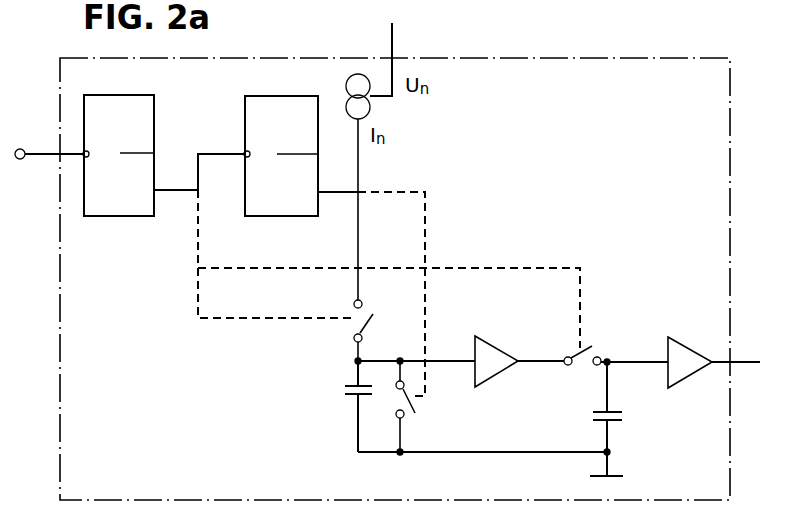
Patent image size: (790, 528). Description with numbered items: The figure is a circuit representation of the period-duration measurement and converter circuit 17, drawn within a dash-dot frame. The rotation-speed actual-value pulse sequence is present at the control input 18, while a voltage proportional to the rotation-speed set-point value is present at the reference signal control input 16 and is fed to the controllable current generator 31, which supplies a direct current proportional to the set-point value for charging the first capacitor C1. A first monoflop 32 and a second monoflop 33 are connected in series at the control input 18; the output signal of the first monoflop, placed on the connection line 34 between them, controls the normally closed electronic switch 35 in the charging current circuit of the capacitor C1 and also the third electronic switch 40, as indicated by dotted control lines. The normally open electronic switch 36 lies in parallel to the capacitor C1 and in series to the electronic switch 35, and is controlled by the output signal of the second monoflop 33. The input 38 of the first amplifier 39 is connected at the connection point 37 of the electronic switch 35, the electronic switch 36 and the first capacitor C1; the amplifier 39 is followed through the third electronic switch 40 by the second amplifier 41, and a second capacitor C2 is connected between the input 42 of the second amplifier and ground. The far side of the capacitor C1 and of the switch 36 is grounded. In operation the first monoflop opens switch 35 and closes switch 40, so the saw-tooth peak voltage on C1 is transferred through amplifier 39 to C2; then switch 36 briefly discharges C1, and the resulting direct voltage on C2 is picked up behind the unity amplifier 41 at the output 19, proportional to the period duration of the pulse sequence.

The reference signal control input 16 is at (392, 43).
The period-duration measurement and converter circuit 17 is at (656, 134).
The control input 18 is at (40, 158).
The output 19 is at (748, 359).
The controllable current generator 31 is at (372, 108).
The first monoflop 32 is at (118, 155).
The second monoflop 33 is at (301, 156).
The connection line 34 is at (172, 190).
The electronic switch 35 is at (373, 314).
The electronic switch 36 is at (422, 406).
The connection point 37 is at (356, 361).
The input of first amplifier 38 is at (440, 358).
The first amplifier 39 is at (519, 361).
The third electronic switch 40 is at (566, 354).
The second amplifier 41 is at (690, 362).
The input of second amplifier 42 is at (633, 358).
The first capacitor C1 is at (352, 396).
The second capacitor C2 is at (598, 428).